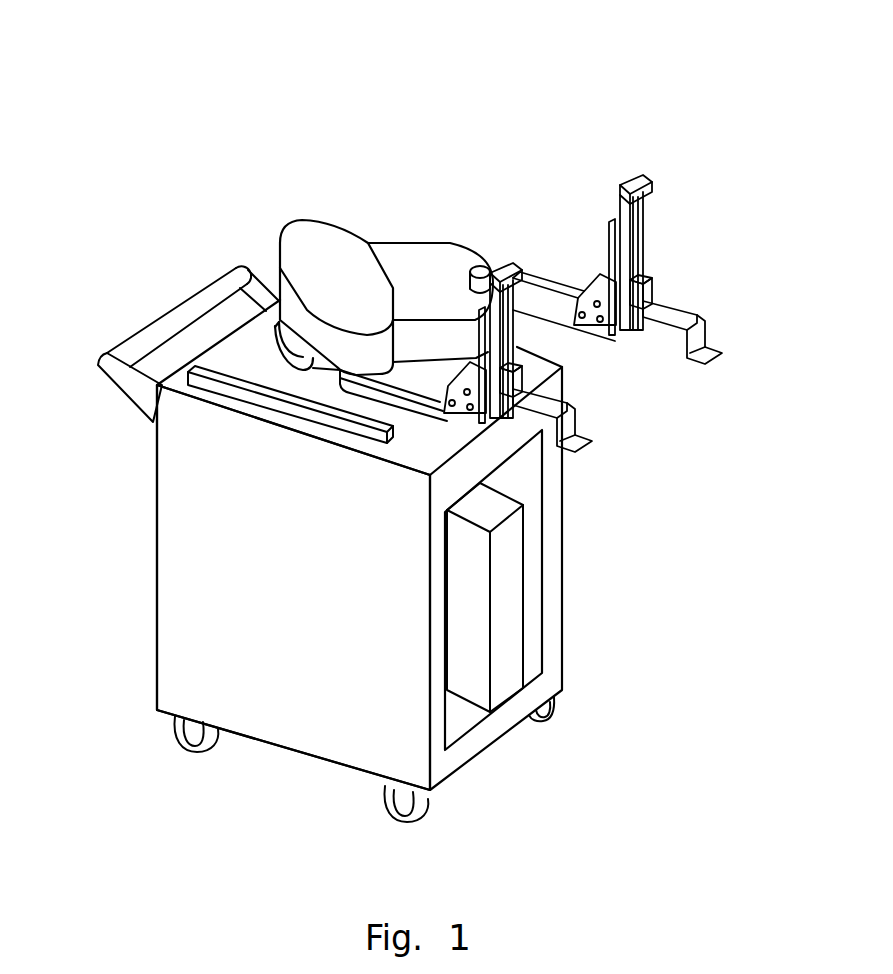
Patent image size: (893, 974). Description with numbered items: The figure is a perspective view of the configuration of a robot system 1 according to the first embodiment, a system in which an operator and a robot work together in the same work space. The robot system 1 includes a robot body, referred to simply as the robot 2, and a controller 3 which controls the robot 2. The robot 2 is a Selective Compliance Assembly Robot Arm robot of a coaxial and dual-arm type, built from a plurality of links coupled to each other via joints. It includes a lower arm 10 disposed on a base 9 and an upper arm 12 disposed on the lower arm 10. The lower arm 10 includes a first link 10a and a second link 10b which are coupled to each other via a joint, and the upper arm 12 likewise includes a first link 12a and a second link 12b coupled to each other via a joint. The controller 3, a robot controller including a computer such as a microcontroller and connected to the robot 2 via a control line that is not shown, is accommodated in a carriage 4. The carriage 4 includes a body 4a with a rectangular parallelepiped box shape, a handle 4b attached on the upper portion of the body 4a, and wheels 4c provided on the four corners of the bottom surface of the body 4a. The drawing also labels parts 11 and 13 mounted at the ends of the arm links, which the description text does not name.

The robot system 1 is at (643, 123).
The robot body 2 is at (340, 227).
The controller 3 is at (508, 567).
The carriage 4 is at (300, 759).
The body 4a is at (170, 623).
The handle 4b is at (157, 337).
The wheels 4c is at (197, 748).
The base 9 is at (248, 392).
The lower arm 10 is at (571, 210).
The first link 10a is at (437, 282).
The second link 10b is at (542, 297).
The hand bracket 11 is at (678, 315).
The upper arm 12 is at (375, 543).
The first link 12a is at (322, 368).
The second link 12b is at (382, 387).
The hand bracket 13 is at (571, 403).